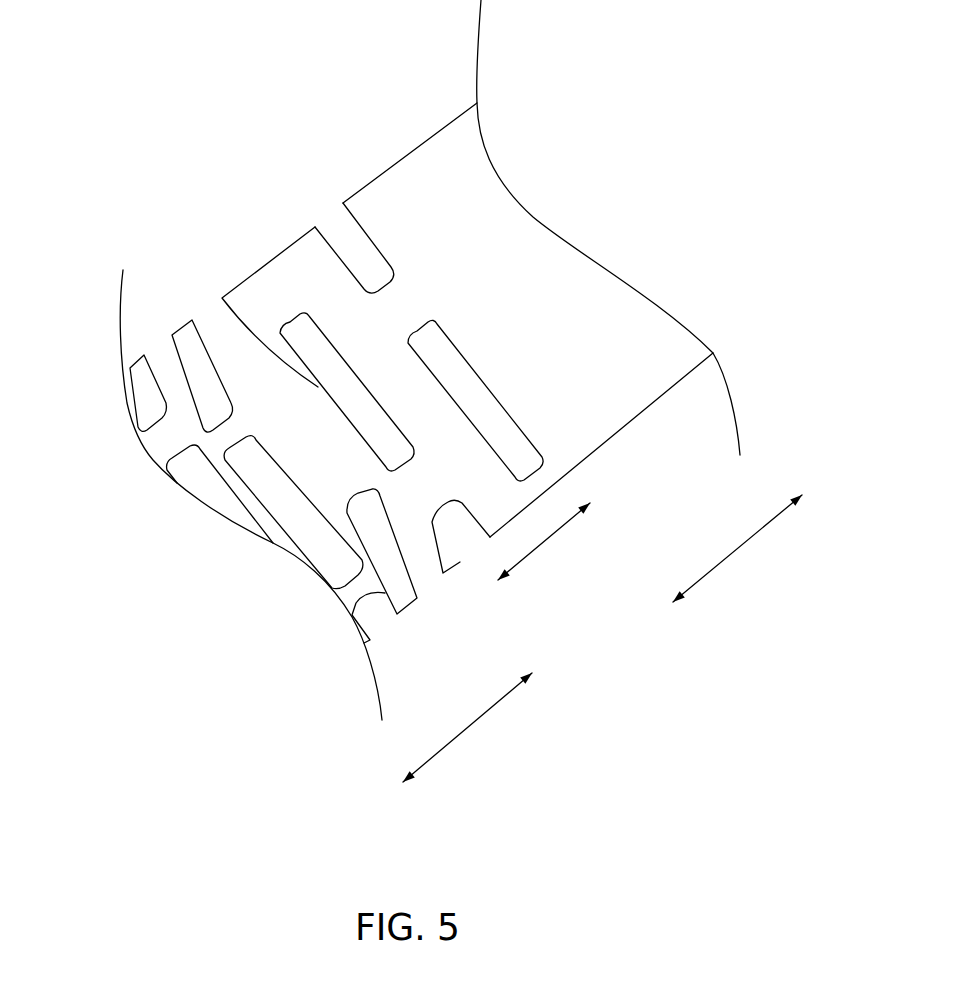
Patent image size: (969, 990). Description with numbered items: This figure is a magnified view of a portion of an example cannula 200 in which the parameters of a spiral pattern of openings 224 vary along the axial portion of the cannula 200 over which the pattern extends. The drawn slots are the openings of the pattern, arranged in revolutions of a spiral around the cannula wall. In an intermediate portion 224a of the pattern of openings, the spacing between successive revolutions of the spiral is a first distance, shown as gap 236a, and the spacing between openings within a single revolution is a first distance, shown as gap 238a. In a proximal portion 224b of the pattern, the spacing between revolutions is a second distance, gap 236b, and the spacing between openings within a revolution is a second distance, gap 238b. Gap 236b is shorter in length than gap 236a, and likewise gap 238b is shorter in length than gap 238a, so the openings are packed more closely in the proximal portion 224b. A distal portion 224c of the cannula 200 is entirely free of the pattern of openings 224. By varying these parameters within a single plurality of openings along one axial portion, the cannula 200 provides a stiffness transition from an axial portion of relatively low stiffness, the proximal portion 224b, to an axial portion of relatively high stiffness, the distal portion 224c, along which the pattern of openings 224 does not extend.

The cannula 200 is at (258, 207).
The pattern of openings 224 is at (324, 195).
The intermediate portion 224a is at (525, 560).
The proximal portion 224b is at (468, 728).
The distal portion 224c is at (740, 548).
The gap 236a is at (442, 378).
The gap 236b is at (311, 395).
The gap 238a is at (403, 467).
The gap 238b is at (236, 445).